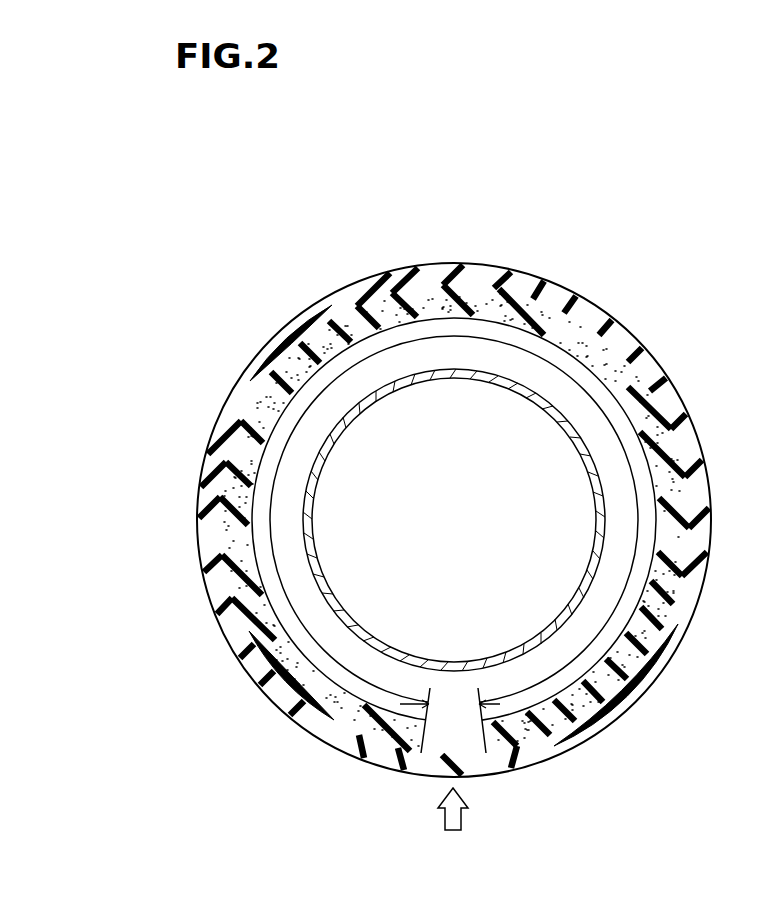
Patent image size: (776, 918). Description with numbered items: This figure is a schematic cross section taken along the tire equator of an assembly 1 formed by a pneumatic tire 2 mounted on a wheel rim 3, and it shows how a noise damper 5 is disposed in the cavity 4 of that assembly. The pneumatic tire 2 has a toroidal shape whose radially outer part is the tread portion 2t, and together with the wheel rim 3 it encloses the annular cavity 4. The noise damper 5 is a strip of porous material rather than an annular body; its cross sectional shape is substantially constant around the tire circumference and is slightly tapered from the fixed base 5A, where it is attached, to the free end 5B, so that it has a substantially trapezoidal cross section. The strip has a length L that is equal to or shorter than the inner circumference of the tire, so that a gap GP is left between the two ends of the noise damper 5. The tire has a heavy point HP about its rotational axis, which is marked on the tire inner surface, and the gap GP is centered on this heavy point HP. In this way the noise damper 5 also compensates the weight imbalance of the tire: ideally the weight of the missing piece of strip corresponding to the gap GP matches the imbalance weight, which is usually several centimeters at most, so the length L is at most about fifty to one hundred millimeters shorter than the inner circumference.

The hose 1 is at (606, 262).
The pneumatic tire 2 is at (650, 358).
The tread portion 2t is at (216, 622).
The wheel rim 3 is at (560, 428).
The cavity 4 is at (379, 372).
The noise damper 5 is at (353, 722).
The fixed base 5A is at (215, 488).
The free end 5B is at (255, 490).
The gap GP is at (455, 735).
The heavy point HP is at (452, 828).
The length L is at (585, 660).